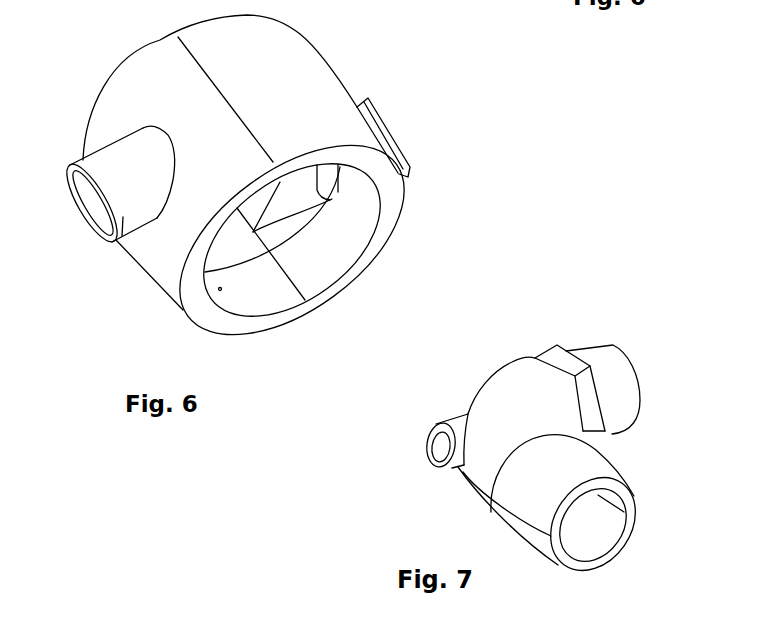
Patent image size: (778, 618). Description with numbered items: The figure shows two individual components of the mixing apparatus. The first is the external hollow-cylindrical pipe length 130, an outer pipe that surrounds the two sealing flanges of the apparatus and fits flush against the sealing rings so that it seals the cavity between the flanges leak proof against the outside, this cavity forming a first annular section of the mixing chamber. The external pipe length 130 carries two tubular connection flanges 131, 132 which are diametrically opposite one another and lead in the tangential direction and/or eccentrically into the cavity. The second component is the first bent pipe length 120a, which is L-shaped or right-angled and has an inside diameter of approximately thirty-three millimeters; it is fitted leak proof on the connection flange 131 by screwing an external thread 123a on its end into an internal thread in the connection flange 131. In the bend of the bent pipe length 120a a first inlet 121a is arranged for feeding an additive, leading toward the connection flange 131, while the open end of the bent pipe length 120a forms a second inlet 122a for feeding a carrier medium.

In FIG. 6, the external hollow-cylindrical pipe length 130 is at (387, 226).
In FIG. 6, the connection flange 131 is at (373, 117).
In FIG. 6, the connection flange 132 is at (121, 236).
In FIG. 7, the first bent pipe length 120a is at (447, 497).
In FIG. 7, the first inlet 121a is at (445, 450).
In FIG. 7, the second inlet 122a is at (613, 547).
In FIG. 7, the external thread 123a is at (625, 382).